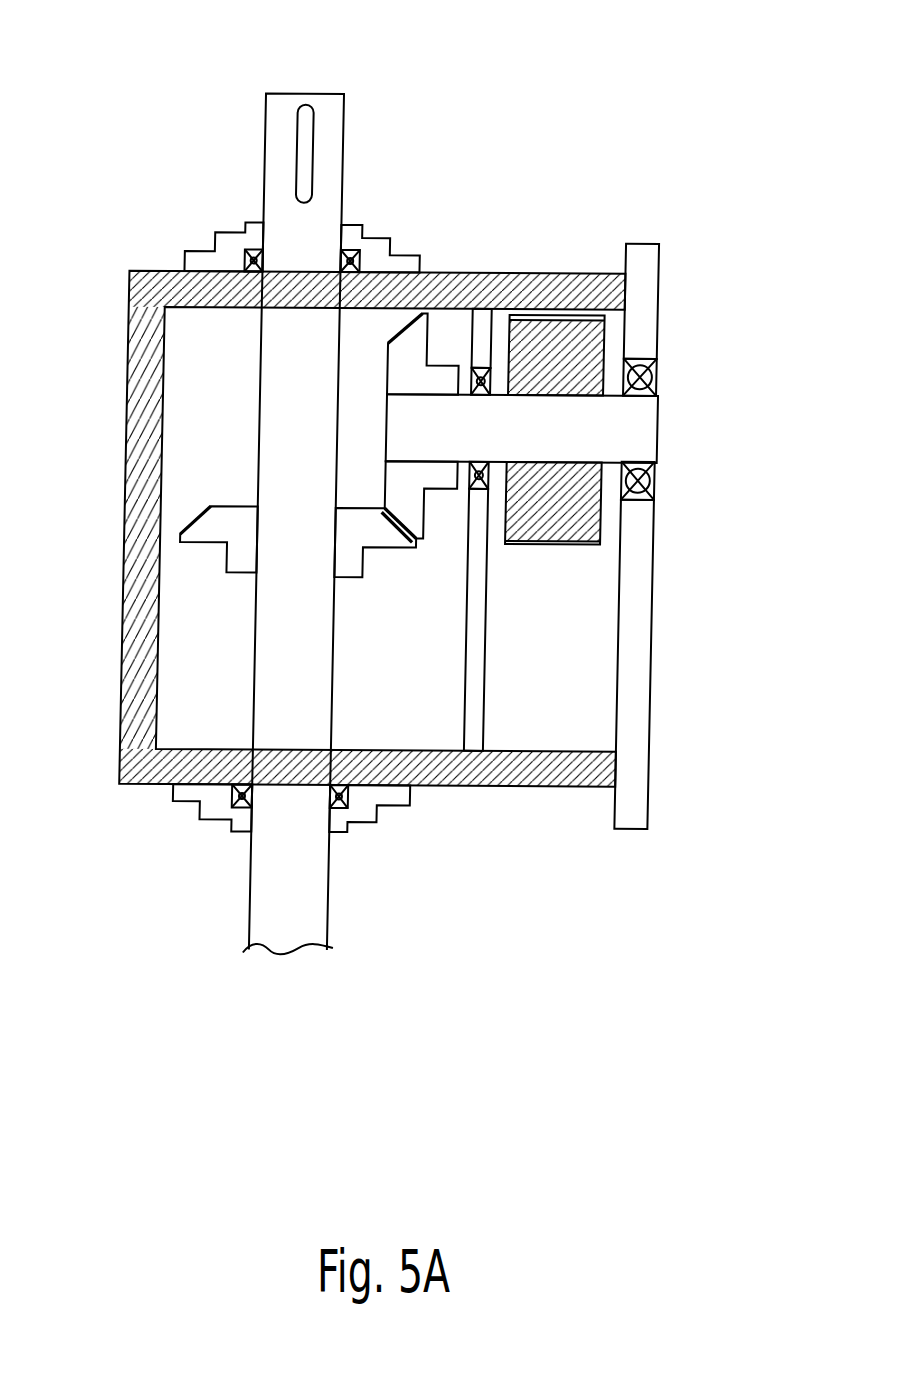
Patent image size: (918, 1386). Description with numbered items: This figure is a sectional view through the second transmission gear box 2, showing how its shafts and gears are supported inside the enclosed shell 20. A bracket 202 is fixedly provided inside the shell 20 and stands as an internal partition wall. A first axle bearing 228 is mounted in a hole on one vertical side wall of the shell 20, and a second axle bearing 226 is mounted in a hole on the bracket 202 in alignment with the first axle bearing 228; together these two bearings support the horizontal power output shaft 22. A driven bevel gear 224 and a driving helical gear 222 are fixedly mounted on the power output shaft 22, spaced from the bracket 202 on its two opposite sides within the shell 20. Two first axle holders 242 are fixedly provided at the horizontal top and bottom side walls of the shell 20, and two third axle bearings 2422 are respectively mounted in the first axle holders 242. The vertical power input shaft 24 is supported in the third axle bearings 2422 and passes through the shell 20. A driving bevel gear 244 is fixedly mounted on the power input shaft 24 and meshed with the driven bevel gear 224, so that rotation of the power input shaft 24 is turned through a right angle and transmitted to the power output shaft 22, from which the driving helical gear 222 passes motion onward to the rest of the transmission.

The second transmission gear box 2 is at (667, 198).
The enclosed shell 20 is at (647, 295).
The power output shaft 22 is at (643, 438).
The power input shaft 24 is at (283, 108).
The bracket 202 is at (477, 742).
The driving helical gear 222 is at (553, 327).
The driven bevel gear 224 is at (422, 312).
The second axle bearing 226 is at (483, 327).
The first axle bearing 228 is at (647, 383).
The first axle holder 242 is at (210, 263).
The third axle bearing 2422 is at (248, 255).
The driving bevel gear 244 is at (207, 522).